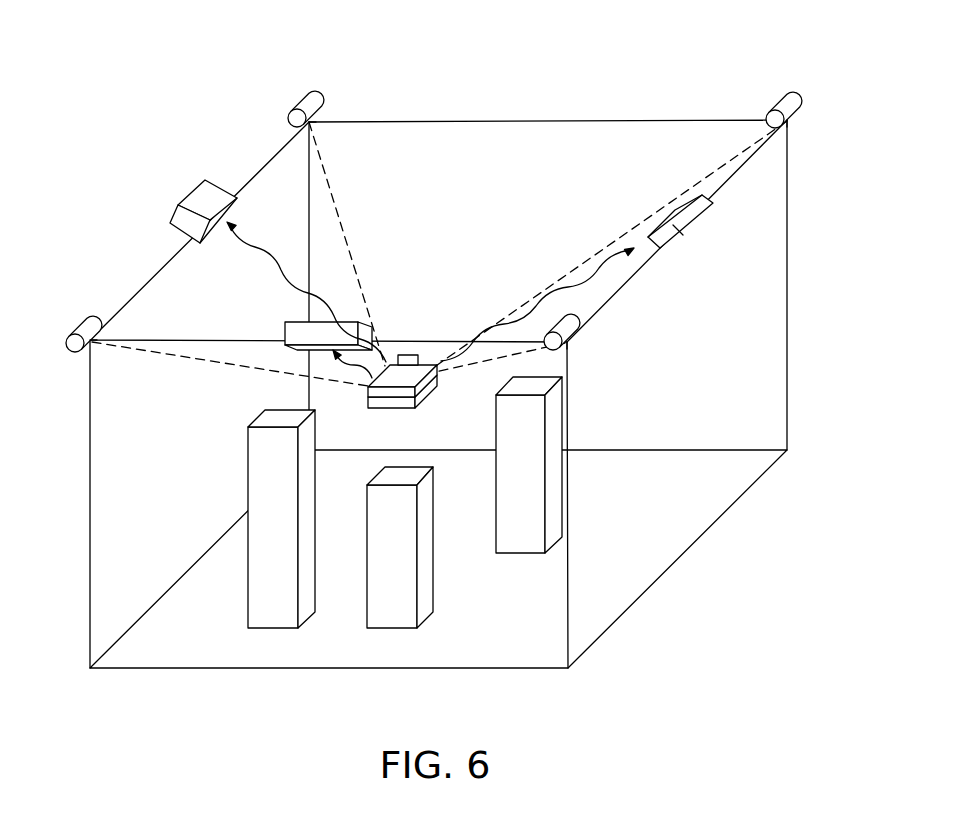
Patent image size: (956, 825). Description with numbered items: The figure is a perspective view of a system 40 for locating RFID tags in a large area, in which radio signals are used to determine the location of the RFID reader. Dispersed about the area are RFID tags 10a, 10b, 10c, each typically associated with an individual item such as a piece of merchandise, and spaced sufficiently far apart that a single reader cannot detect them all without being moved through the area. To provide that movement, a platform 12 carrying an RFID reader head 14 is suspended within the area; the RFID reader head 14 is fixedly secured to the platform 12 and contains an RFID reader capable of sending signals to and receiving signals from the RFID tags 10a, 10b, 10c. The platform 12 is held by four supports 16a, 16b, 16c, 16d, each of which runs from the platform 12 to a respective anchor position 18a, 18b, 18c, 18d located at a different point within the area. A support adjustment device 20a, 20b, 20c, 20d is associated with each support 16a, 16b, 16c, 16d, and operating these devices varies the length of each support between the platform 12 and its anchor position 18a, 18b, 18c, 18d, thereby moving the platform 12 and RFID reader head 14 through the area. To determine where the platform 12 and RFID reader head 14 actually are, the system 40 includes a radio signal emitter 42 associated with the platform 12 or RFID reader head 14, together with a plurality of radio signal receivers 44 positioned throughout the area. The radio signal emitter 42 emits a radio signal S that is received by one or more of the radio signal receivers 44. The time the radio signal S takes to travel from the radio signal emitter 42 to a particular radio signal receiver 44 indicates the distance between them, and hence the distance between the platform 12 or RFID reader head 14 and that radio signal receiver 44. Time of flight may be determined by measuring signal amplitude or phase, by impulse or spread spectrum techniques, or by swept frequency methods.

The system 40 is at (570, 97).
The RFID tag 10a is at (528, 553).
The RFID tag 10b is at (433, 590).
The RFID tag 10c is at (271, 628).
The platform 12 is at (424, 370).
The RFID reader head 14 is at (393, 408).
The support 16a is at (628, 232).
The support 16b is at (537, 349).
The support 16c is at (211, 366).
The support 16d is at (344, 227).
The anchor position 18a is at (792, 124).
The anchor position 18b is at (572, 340).
The anchor position 18c is at (96, 338).
The anchor position 18d is at (313, 121).
The support adjustment device 20a is at (790, 95).
The support adjustment device 20b is at (575, 322).
The support adjustment device 20c is at (78, 322).
The support adjustment device 20d is at (300, 100).
The radio signal emitter 42 is at (404, 355).
The radio signal receiver 44 is at (176, 209).
The radio signal S is at (262, 242).